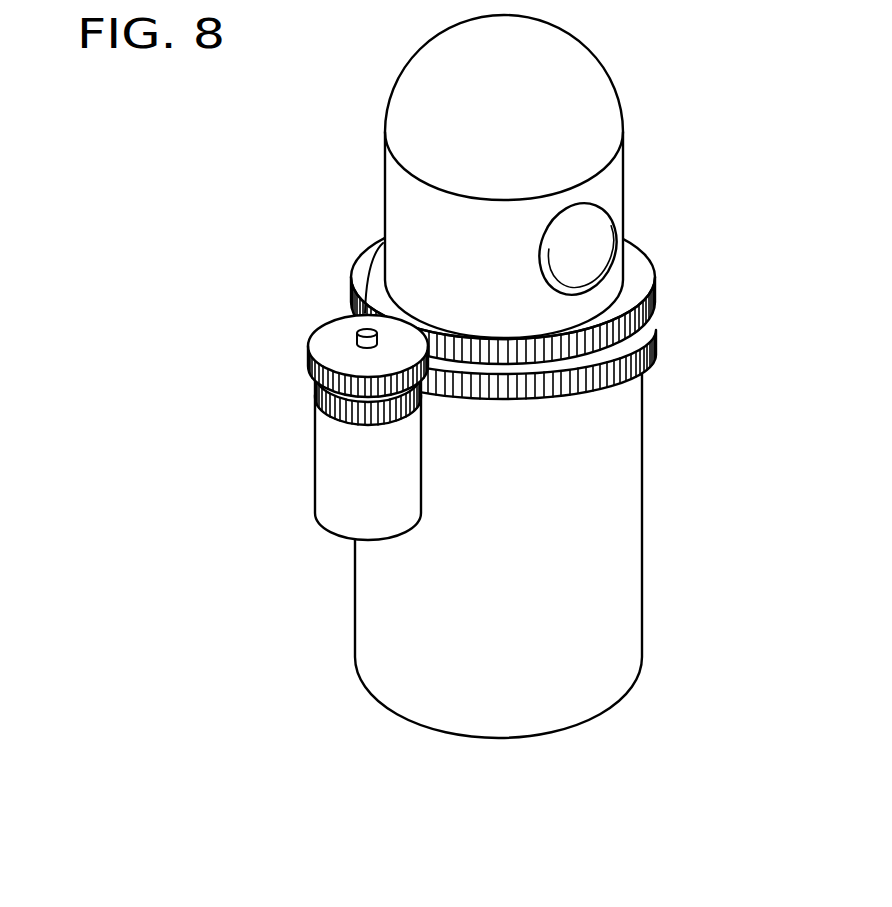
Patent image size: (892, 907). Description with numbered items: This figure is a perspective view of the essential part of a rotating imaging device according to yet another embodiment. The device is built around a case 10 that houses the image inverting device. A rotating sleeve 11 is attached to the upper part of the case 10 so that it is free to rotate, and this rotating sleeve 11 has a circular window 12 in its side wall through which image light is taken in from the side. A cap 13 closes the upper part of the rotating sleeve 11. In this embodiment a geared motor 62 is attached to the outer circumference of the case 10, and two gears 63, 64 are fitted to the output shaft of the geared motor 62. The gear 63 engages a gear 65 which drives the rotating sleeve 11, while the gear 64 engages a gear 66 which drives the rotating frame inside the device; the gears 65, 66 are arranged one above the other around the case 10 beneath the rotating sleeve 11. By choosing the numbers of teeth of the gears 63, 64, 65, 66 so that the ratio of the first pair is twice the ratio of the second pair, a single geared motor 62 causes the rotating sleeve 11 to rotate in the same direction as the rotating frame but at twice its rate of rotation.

The case 10 is at (612, 520).
The rotating sleeve 11 is at (402, 208).
The circular window 12 is at (608, 226).
The cap 13 is at (592, 103).
The geared motor 62 is at (330, 470).
The gear 63 is at (310, 360).
The gear 64 is at (315, 402).
The gear 65 is at (635, 305).
The gear 66 is at (647, 340).